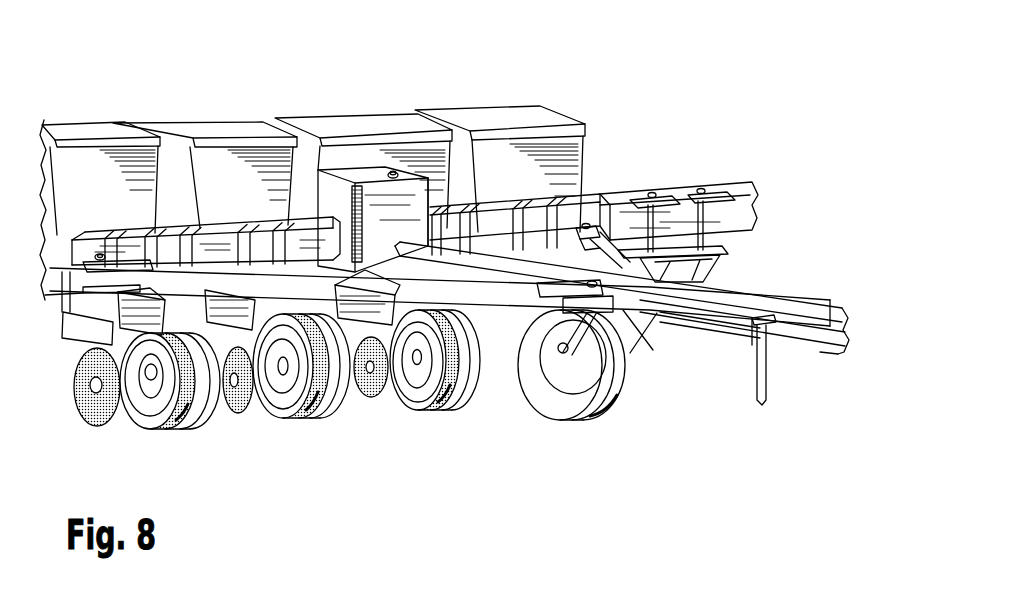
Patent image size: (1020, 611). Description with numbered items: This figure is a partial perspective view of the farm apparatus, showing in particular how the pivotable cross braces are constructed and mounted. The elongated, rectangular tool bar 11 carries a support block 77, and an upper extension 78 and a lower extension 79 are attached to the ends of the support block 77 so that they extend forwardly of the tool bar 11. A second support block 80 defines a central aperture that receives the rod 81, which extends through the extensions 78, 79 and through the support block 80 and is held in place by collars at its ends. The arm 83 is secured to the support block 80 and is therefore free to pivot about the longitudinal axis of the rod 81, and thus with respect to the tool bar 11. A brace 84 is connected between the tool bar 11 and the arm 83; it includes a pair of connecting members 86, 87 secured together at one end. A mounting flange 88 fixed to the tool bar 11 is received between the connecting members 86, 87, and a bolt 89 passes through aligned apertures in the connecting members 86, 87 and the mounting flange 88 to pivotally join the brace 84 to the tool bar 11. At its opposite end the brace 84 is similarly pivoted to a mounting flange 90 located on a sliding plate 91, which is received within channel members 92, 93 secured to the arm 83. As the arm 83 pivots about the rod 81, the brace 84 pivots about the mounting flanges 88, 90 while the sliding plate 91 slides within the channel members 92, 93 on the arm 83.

The tool bar 11 is at (688, 189).
The support block 77 is at (350, 166).
The extension 78 is at (382, 134).
The extension 79 is at (353, 379).
The support block 80 is at (495, 155).
The rod 81 is at (414, 107).
The arm 83 is at (853, 364).
The brace 84 is at (440, 362).
The connecting member 86 is at (336, 171).
The connecting member 87 is at (140, 390).
The mounting flange 88 is at (92, 365).
The bolt 89 is at (115, 179).
The mounting flange 90 is at (621, 357).
The sliding plate 91 is at (725, 397).
The channel member 92 is at (742, 291).
The channel member 93 is at (787, 380).